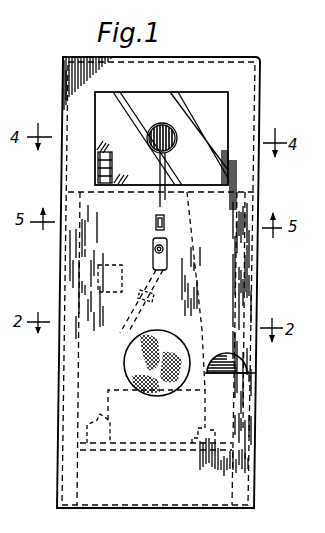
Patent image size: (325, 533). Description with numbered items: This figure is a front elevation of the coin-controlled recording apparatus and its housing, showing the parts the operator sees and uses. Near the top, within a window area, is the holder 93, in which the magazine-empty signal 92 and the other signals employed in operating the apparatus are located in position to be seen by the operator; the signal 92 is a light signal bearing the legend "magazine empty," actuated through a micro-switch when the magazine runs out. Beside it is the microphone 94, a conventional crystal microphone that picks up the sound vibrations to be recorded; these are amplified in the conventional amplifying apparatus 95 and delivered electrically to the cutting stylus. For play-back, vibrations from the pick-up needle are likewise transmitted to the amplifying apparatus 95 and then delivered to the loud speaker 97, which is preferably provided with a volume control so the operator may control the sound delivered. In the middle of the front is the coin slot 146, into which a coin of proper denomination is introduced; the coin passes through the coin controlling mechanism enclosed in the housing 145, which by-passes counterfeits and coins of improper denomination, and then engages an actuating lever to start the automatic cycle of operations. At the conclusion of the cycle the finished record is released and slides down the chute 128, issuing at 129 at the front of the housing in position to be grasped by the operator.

The signal 92 is at (117, 178).
The holder 93 is at (112, 151).
The microphone 94 is at (173, 132).
The amplifying apparatus 95 is at (200, 417).
The loud speaker 97 is at (164, 331).
The chute 128 is at (240, 310).
The record issue point 129 is at (240, 376).
The coin controlling mechanism housing 145 is at (167, 254).
The coin slot 146 is at (155, 223).